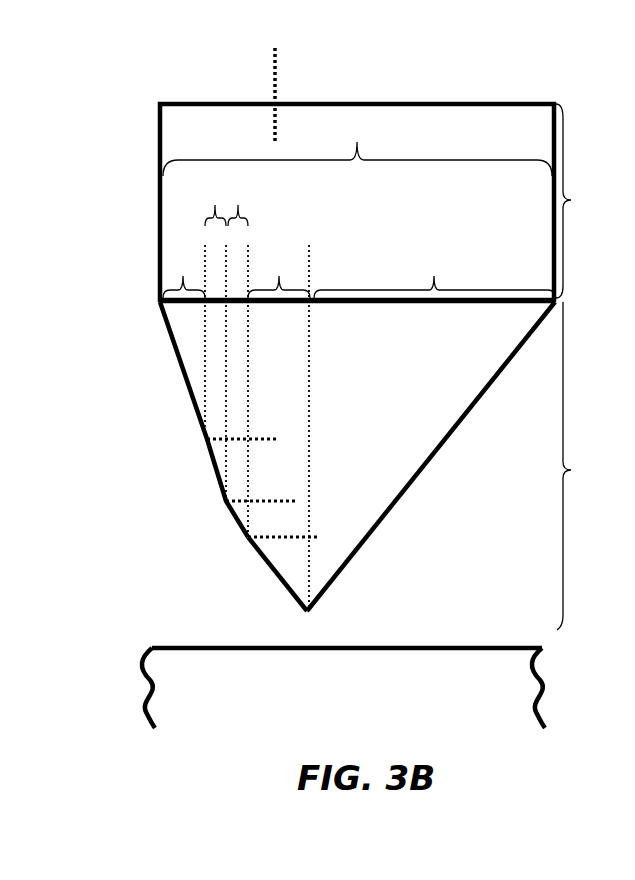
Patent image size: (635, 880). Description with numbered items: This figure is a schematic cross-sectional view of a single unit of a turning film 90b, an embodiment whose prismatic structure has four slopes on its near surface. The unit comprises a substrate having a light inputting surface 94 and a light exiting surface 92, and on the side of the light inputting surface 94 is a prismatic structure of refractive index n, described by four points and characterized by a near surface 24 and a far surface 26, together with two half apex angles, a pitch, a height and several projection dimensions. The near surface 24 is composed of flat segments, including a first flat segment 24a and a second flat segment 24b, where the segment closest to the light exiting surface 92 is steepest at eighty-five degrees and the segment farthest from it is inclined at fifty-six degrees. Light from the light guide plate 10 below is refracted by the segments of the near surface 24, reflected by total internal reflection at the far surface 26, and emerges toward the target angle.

The turning film 90b is at (128, 140).
The light exiting surface 92 is at (238, 103).
The light inputting surface 94 is at (158, 300).
The near surface 24 is at (98, 505).
The second flat segment 24b is at (182, 380).
The first flat segment 24a is at (277, 577).
The far surface 26 is at (455, 427).
The light guide plate 10 is at (543, 690).